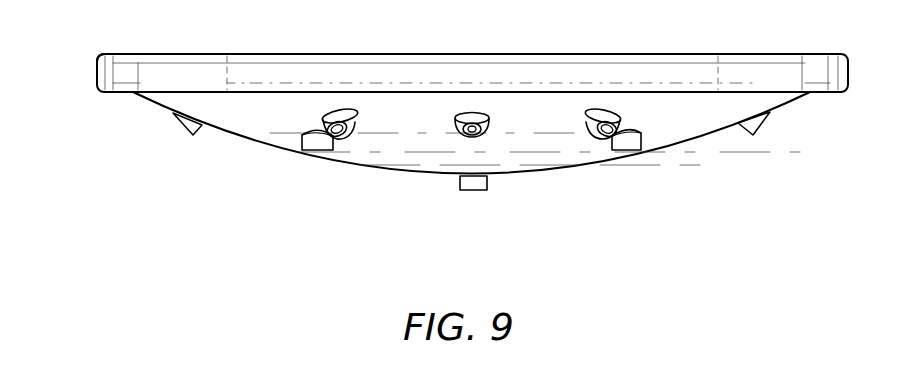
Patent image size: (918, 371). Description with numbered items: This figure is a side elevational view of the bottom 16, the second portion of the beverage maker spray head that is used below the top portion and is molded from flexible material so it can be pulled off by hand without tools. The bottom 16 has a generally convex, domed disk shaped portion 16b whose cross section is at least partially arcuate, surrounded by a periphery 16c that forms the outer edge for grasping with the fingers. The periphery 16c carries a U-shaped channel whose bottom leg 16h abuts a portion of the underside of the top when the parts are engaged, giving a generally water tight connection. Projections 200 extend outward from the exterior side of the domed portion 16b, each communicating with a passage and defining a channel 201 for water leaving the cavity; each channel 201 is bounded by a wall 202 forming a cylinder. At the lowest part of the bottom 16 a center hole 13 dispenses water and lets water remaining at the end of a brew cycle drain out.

The bottom 16 is at (206, 185).
The bottom leg 16h is at (248, 53).
The periphery 16c is at (120, 72).
The generally convex disk shaped portion 16b is at (417, 157).
The projection 200 is at (310, 144).
The channel 201 is at (472, 132).
The wall 202 is at (458, 180).
The center hole 13 is at (470, 198).